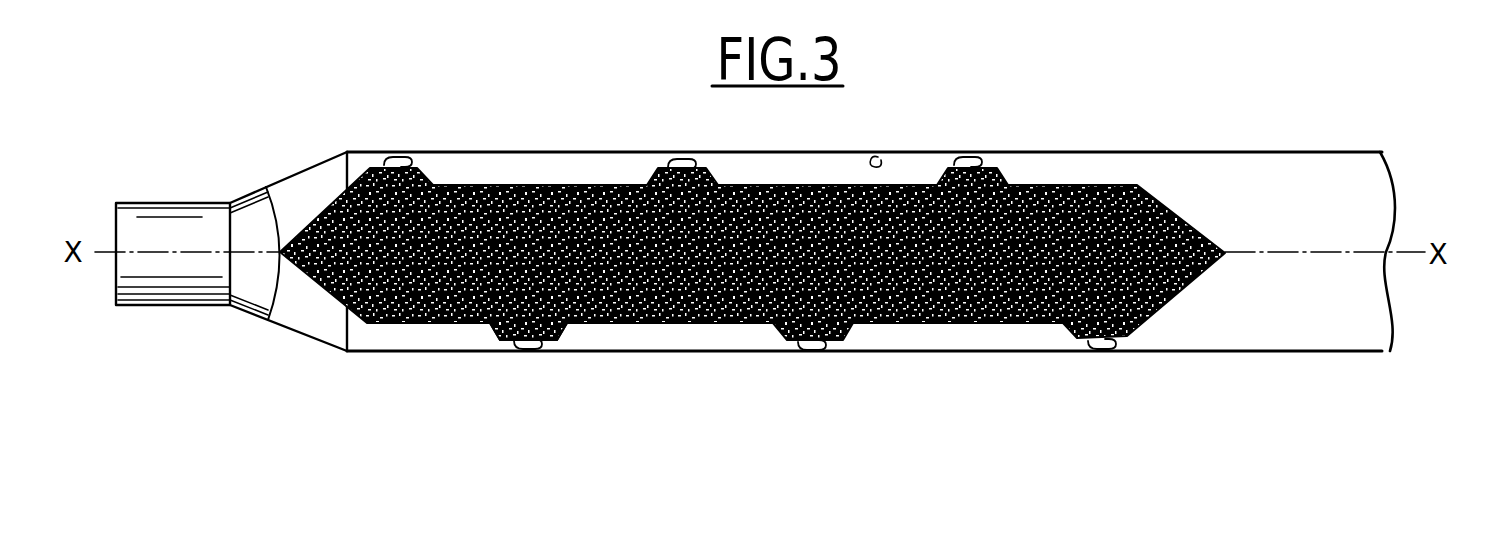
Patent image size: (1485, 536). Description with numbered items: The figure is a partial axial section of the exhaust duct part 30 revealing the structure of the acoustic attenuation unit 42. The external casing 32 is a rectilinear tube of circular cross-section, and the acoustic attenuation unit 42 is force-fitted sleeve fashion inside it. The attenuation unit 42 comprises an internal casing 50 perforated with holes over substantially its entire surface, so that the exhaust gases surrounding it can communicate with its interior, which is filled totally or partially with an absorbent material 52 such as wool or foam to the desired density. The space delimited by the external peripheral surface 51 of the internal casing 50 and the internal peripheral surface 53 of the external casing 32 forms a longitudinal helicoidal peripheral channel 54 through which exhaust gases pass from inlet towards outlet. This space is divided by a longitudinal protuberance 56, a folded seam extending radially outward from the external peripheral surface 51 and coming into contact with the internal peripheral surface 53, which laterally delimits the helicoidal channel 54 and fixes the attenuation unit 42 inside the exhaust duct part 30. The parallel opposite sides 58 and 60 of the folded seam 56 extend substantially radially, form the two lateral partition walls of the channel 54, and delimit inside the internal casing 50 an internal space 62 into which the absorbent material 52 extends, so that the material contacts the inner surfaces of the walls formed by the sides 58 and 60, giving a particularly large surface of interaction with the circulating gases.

The exhaust duct part 30 is at (598, 148).
The external casing 32 is at (1007, 152).
The acoustic attenuation unit 42 is at (1216, 220).
The internal casing 50 is at (915, 164).
The external peripheral surface 51 is at (747, 187).
The absorbent material 52 is at (667, 323).
The internal peripheral surface 53 is at (881, 160).
The helicoidal peripheral channel 54 is at (784, 176).
The longitudinal protuberance 56 is at (388, 153).
The first side of folded seam 58 is at (560, 327).
The second side of folded seam 60 is at (499, 329).
The internal space 62 is at (522, 344).